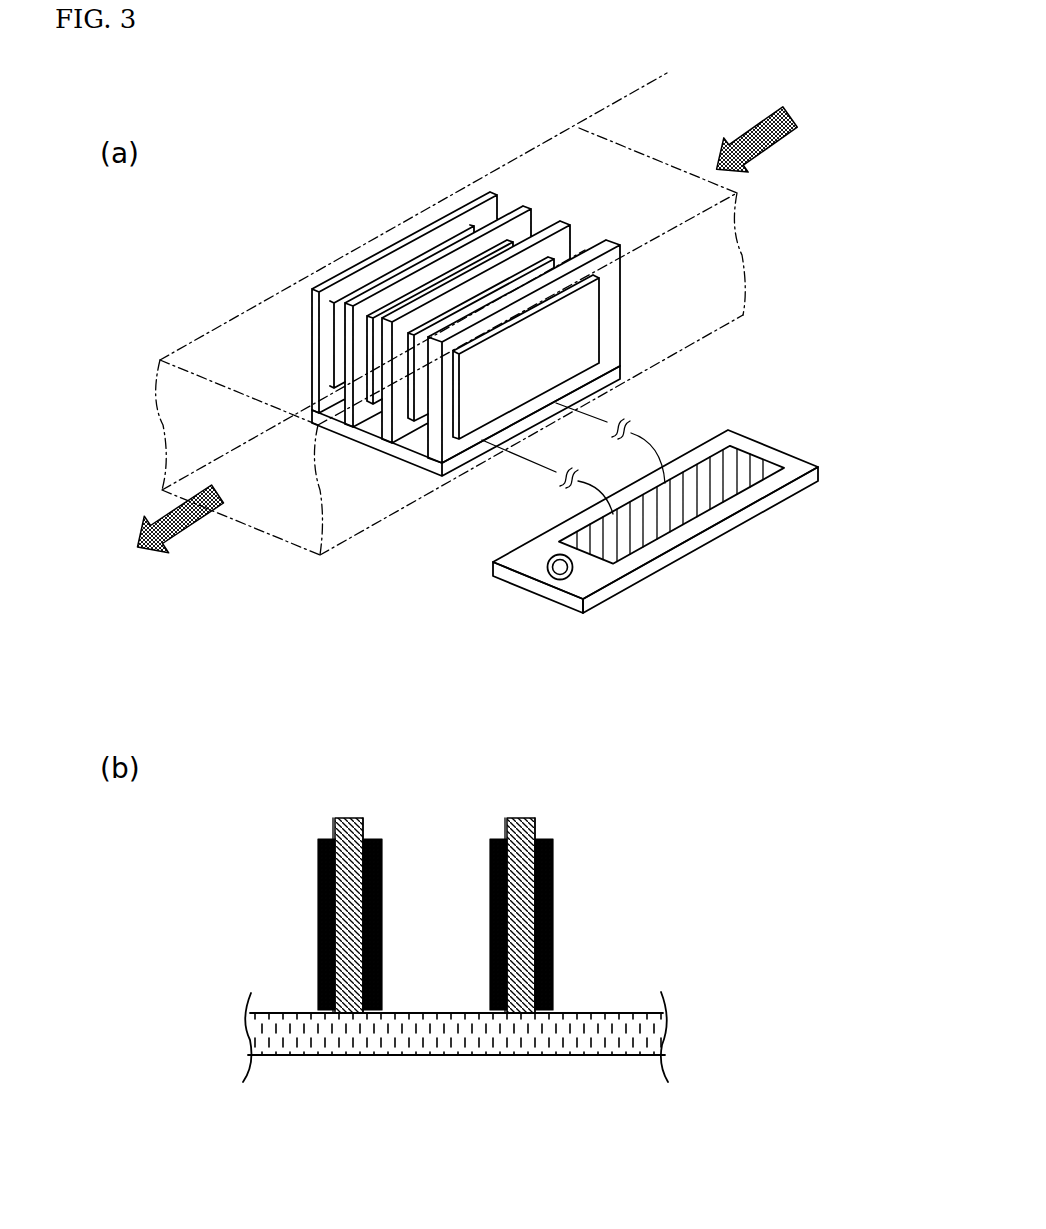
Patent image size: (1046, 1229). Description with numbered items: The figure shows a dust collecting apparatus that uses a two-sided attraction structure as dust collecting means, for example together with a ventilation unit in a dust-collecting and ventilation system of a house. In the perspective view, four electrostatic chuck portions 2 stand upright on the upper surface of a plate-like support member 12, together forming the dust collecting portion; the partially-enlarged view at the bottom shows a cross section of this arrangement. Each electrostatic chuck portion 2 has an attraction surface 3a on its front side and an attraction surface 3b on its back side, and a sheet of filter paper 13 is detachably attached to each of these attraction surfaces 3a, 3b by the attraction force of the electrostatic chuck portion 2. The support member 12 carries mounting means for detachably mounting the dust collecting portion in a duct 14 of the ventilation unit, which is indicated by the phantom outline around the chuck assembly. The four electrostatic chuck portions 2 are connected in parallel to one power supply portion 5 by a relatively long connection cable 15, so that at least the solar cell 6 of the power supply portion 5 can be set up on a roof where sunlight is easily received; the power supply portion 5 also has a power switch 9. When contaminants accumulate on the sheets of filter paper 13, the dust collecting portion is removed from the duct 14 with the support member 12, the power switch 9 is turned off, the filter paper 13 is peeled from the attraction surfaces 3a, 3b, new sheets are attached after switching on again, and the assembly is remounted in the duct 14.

The electrostatic chuck portion 2 is at (532, 202).
The attraction surface 3a is at (334, 828).
The attraction surface 3b is at (364, 828).
The power supply portion 5 is at (631, 552).
The solar cell 6 is at (722, 484).
The power switch 9 is at (572, 575).
The support member 12 is at (420, 460).
The filter paper 13 is at (583, 351).
The duct 14 is at (242, 347).
The connection cable 15 is at (663, 450).